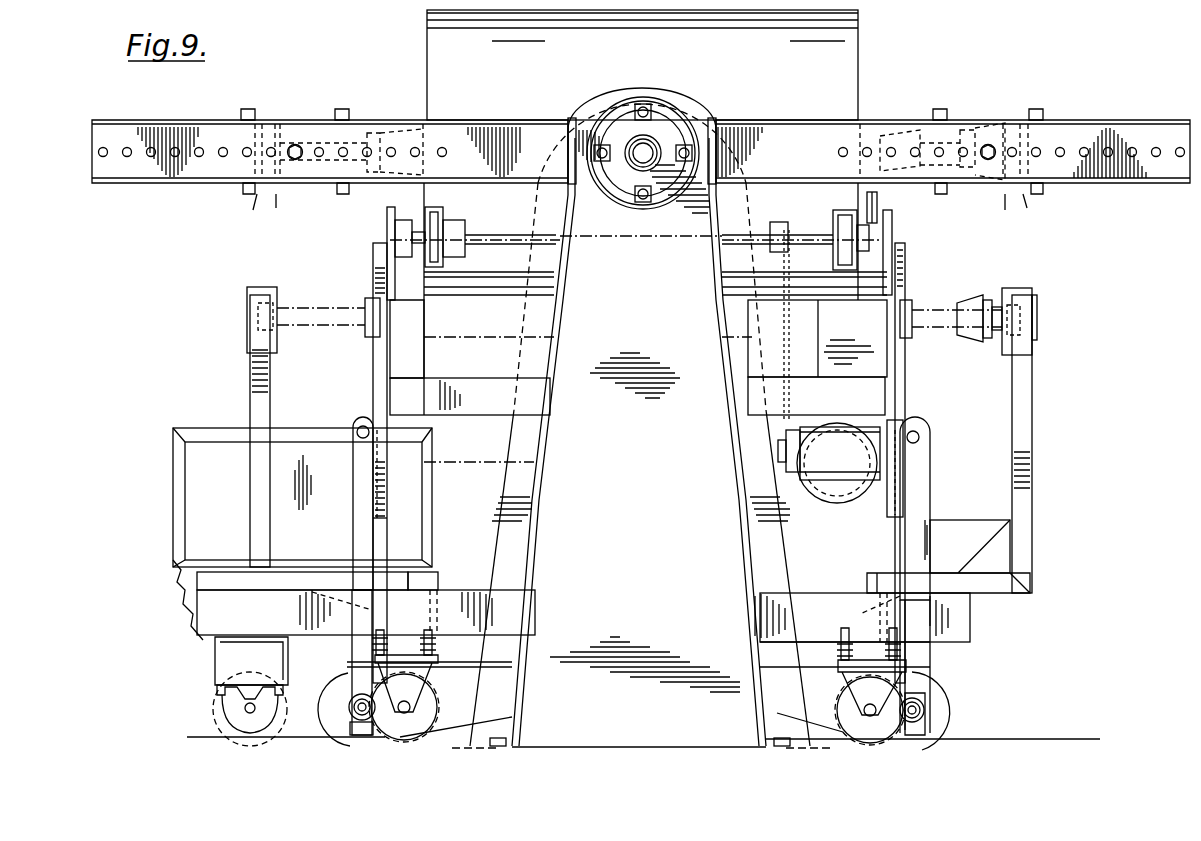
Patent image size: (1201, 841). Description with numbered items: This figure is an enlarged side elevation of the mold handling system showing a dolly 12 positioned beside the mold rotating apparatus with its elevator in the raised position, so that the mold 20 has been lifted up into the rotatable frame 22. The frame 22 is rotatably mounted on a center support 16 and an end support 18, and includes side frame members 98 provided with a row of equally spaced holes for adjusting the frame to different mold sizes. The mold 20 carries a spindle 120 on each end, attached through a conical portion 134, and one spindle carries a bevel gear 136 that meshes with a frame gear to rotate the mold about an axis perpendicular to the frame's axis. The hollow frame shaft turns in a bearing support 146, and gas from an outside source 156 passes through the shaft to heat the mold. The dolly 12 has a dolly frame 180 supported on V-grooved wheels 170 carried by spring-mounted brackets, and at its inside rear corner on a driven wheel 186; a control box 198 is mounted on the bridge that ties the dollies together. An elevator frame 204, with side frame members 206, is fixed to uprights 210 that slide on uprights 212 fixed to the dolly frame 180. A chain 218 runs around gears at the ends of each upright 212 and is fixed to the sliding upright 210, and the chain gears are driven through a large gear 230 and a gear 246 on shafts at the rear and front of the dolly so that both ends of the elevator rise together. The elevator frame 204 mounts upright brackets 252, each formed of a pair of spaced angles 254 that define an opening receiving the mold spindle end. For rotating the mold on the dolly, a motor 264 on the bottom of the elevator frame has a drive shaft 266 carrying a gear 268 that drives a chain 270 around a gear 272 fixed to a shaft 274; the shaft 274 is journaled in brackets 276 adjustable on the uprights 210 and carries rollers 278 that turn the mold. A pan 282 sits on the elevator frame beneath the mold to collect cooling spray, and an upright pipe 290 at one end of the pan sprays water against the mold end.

The side frame member 98 is at (208, 122).
The frame 22 is at (376, 118).
The mold 20 is at (520, 84).
The outside source 156 is at (626, 118).
The bearing support 146 is at (666, 113).
The conical portion 134 is at (882, 132).
The spindle 120 is at (920, 134).
The bevel gear 136 is at (969, 140).
The roller 278 is at (429, 208).
The bracket 276 is at (385, 219).
The upright pipe 290 is at (877, 205).
The upright 210 is at (370, 262).
The upright bracket 252 is at (242, 323).
The angle 254 is at (250, 380).
The control box 198 is at (193, 428).
The dolly 12 is at (348, 419).
The upright 212 is at (348, 524).
The side frame member 206 is at (488, 410).
The elevator frame 204 is at (534, 422).
The shaft 274 is at (725, 245).
The gear 272 is at (780, 221).
The chain 270 is at (784, 338).
The pan 282 is at (888, 353).
The motor 264 is at (833, 504).
The drive shaft 266 is at (785, 446).
The gear 268 is at (790, 464).
The center support 16 is at (784, 516).
The end support 18 is at (765, 574).
The dolly frame 180 is at (462, 586).
The wheel 186 is at (290, 706).
The large gear 230 is at (342, 684).
The wheel 170 is at (430, 704).
The gear 246 is at (936, 691).
The chain 218 is at (935, 504).